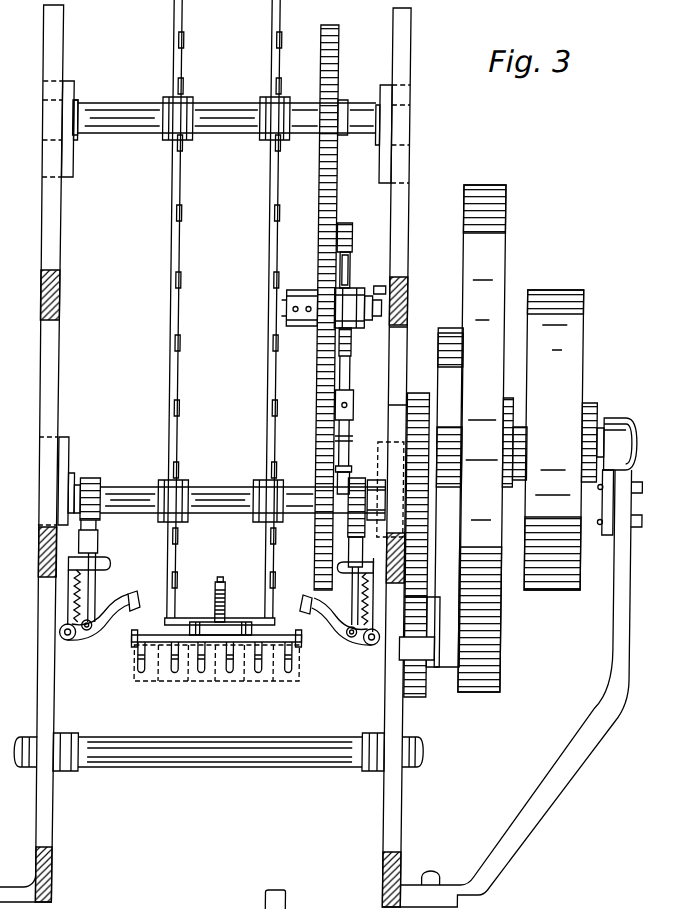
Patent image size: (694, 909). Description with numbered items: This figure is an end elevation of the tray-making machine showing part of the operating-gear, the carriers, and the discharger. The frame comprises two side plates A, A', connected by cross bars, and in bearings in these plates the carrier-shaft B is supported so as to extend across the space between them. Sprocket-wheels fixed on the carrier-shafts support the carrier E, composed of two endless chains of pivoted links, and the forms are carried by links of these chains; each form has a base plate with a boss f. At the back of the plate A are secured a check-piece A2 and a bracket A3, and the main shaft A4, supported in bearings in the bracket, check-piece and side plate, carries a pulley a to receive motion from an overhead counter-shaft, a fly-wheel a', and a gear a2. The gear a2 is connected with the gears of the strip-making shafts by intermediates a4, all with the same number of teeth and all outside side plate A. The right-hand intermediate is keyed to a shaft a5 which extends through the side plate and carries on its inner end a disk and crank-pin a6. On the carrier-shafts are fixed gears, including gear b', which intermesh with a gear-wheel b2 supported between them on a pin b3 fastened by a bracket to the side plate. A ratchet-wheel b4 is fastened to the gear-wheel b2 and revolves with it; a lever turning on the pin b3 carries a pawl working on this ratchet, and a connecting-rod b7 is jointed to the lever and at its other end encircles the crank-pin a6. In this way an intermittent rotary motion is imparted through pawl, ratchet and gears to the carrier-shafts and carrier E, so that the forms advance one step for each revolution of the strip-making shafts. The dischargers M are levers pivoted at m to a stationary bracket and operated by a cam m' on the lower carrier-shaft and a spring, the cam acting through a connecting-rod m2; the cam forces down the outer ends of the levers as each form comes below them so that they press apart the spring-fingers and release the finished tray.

The side plate A is at (399, 457).
The side plate A' is at (40, 453).
The check-piece A2 is at (447, 384).
The bracket A3 is at (623, 651).
The main shaft A4 is at (611, 403).
The carrier-shaft B is at (225, 110).
The carrier E is at (209, 312).
The pulley a is at (565, 440).
The fly-wheel a' is at (494, 438).
The gear a2 is at (396, 493).
The intermediate a4 is at (428, 537).
The shaft a5 is at (408, 488).
The disk and crank-pin a6 is at (341, 493).
The gear b' is at (322, 391).
The gear-wheel b2 is at (320, 260).
The pin b3 is at (289, 311).
The ratchet-wheel b4 is at (345, 222).
The connecting-rod b7 is at (344, 382).
The boss f is at (209, 623).
The pivot m is at (75, 642).
The cam m' is at (230, 484).
The connecting-rod m2 is at (96, 552).
The discharger M is at (223, 620).